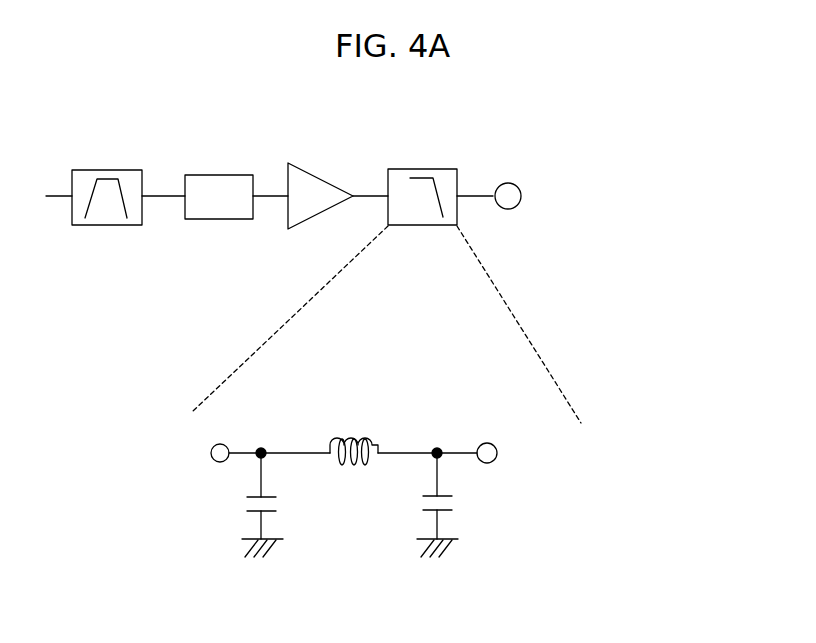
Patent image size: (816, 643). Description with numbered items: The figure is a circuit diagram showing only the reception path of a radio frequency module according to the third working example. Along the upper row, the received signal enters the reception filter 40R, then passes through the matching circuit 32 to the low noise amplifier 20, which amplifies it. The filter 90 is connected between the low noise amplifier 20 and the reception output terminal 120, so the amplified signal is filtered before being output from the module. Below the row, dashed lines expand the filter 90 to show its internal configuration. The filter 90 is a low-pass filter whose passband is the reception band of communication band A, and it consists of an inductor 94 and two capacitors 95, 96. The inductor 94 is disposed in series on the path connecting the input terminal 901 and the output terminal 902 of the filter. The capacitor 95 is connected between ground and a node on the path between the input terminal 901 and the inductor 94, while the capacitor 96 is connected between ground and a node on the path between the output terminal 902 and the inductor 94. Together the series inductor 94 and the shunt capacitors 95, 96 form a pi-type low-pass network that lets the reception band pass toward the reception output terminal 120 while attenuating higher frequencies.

The reception filter 40R is at (107, 170).
The matching circuit 32 is at (212, 175).
The low noise amplifier 20 is at (318, 172).
The filter 90 is at (415, 169).
The reception output terminal 120 is at (510, 183).
The inductor 94 is at (370, 438).
The capacitor 95 is at (278, 499).
The capacitor 96 is at (453, 503).
The input terminal 901 is at (214, 459).
The output terminal 902 is at (497, 450).